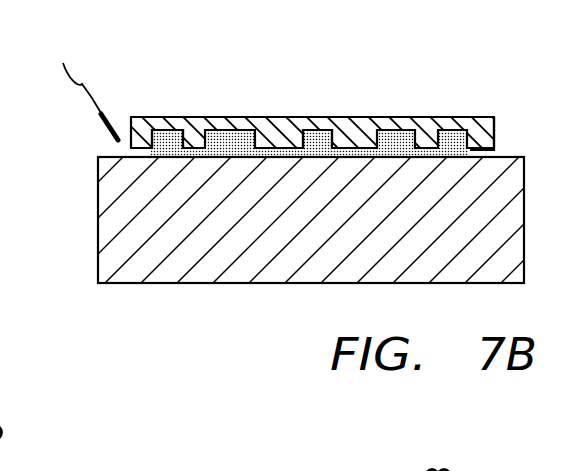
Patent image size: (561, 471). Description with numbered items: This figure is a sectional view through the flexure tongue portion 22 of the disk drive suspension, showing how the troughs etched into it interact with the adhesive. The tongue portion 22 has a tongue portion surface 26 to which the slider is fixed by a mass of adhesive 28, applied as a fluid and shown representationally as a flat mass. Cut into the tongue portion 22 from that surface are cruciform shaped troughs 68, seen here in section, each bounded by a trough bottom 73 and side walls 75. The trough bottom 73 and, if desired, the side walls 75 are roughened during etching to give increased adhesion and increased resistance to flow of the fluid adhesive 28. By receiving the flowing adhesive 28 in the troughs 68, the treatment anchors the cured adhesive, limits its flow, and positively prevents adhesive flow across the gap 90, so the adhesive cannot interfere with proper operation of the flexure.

The flexure tongue portion 22 is at (402, 117).
The tongue portion surface 26 is at (494, 152).
The adhesive 28 is at (313, 147).
The cruciform shaped troughs 68 is at (213, 148).
The trough bottom 73 is at (155, 131).
The trough side walls 75 is at (443, 142).
The gap 90 is at (88, 88).